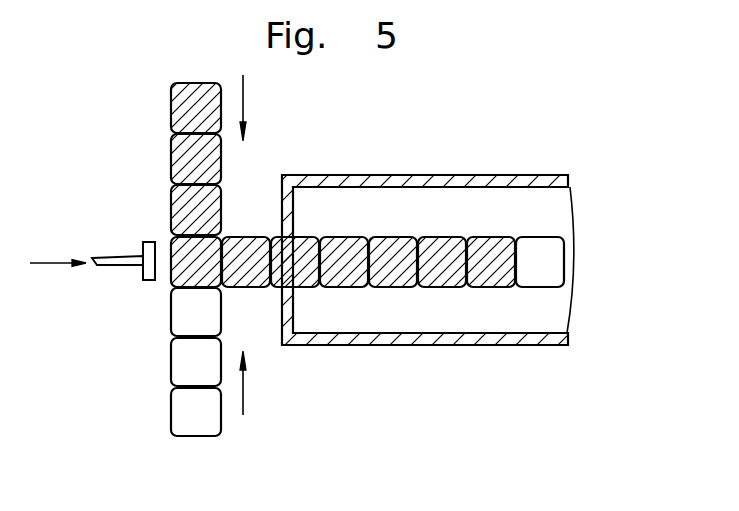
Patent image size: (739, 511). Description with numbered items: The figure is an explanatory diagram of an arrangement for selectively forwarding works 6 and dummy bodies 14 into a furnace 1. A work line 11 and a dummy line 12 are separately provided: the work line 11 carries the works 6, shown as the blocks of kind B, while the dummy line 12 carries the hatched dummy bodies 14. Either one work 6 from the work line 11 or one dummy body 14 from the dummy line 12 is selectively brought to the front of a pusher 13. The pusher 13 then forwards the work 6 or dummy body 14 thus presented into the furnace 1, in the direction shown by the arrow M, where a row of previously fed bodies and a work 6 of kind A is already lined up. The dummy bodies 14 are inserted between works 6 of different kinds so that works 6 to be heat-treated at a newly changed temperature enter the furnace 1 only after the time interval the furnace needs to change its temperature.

The furnace 1 is at (395, 347).
The work 6 is at (554, 262).
The work line 11 is at (258, 383).
The dummy line 12 is at (258, 108).
The pusher 13 is at (113, 266).
The dummy body 14 is at (178, 105).
The arrow M is at (58, 254).